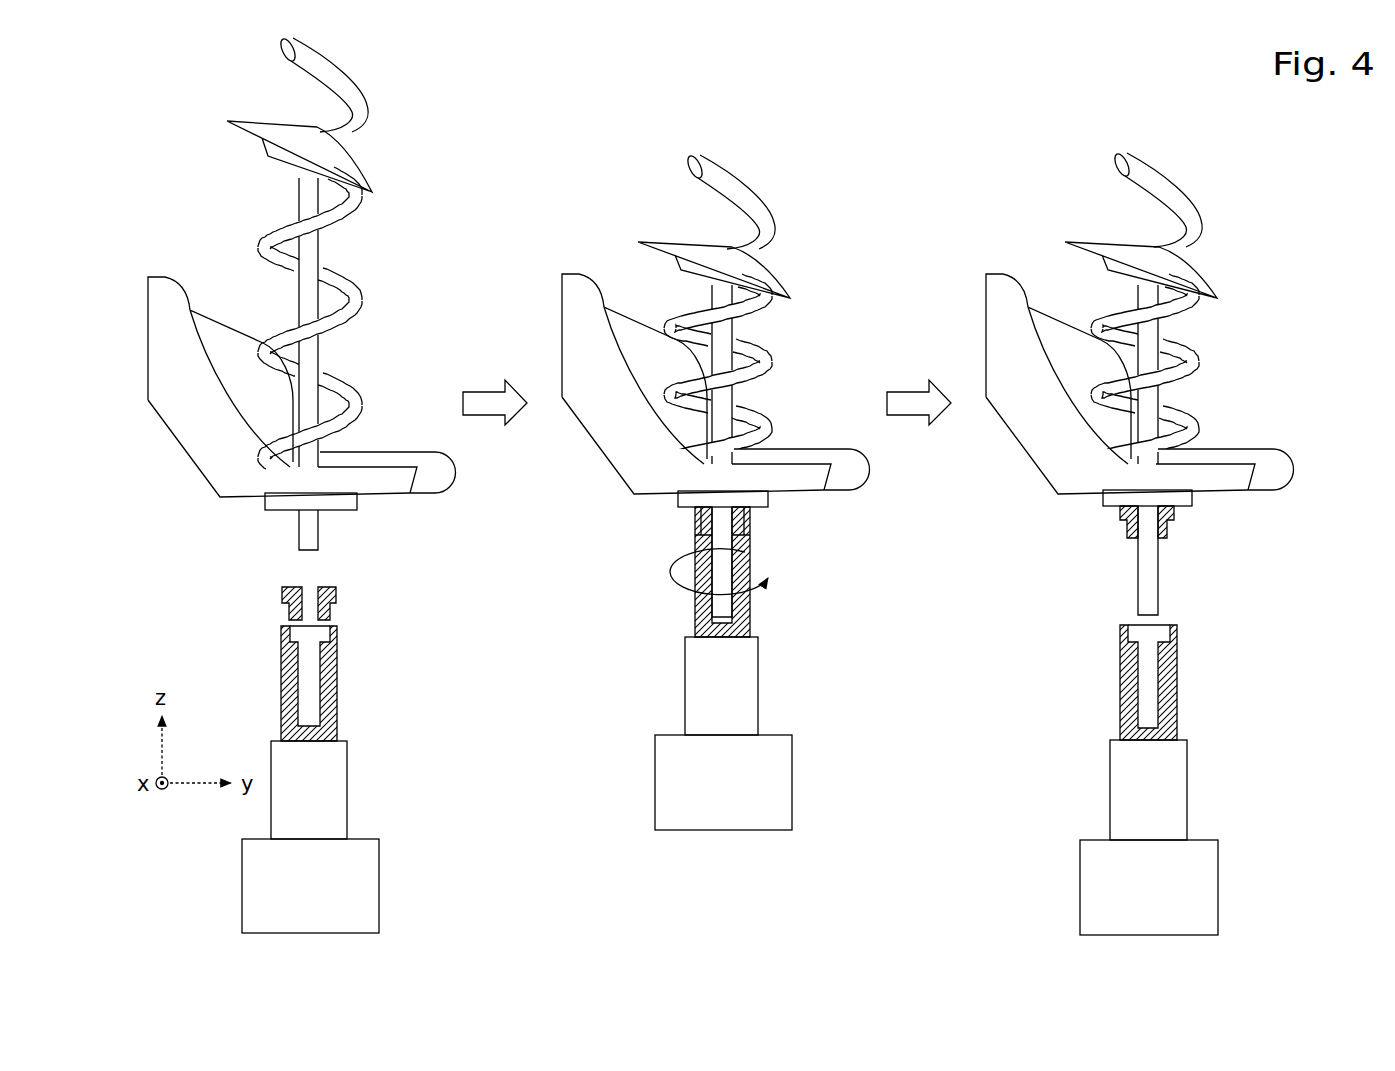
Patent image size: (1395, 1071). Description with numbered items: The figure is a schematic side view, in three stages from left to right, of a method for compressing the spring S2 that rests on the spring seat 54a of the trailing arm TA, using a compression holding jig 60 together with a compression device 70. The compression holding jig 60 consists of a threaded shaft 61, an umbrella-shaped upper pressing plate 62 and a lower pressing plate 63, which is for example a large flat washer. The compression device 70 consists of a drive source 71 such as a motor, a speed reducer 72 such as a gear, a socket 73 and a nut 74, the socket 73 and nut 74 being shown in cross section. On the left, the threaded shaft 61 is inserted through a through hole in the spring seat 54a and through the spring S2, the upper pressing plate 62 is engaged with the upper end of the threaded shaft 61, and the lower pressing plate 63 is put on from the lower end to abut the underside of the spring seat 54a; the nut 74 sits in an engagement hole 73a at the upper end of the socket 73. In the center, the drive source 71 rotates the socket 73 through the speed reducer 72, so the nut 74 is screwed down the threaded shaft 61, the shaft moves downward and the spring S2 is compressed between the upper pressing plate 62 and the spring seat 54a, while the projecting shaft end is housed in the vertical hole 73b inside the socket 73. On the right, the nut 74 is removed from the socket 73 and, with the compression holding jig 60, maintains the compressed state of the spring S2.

The compression holding jig 60 is at (753, 327).
The threaded shaft 61 is at (303, 313).
The upper pressing plate 62 is at (343, 163).
The spring S2 is at (345, 293).
The spring seat 54a is at (422, 460).
The trailing arm TA is at (711, 401).
The lower pressing plate 63 is at (357, 500).
The compression device 70 is at (747, 720).
The drive source 71 is at (380, 858).
The speed reducer 72 is at (347, 780).
The socket 73 is at (726, 624).
The engagement hole 73a is at (301, 634).
The vertical hole 73b is at (309, 668).
The nut 74 is at (337, 597).